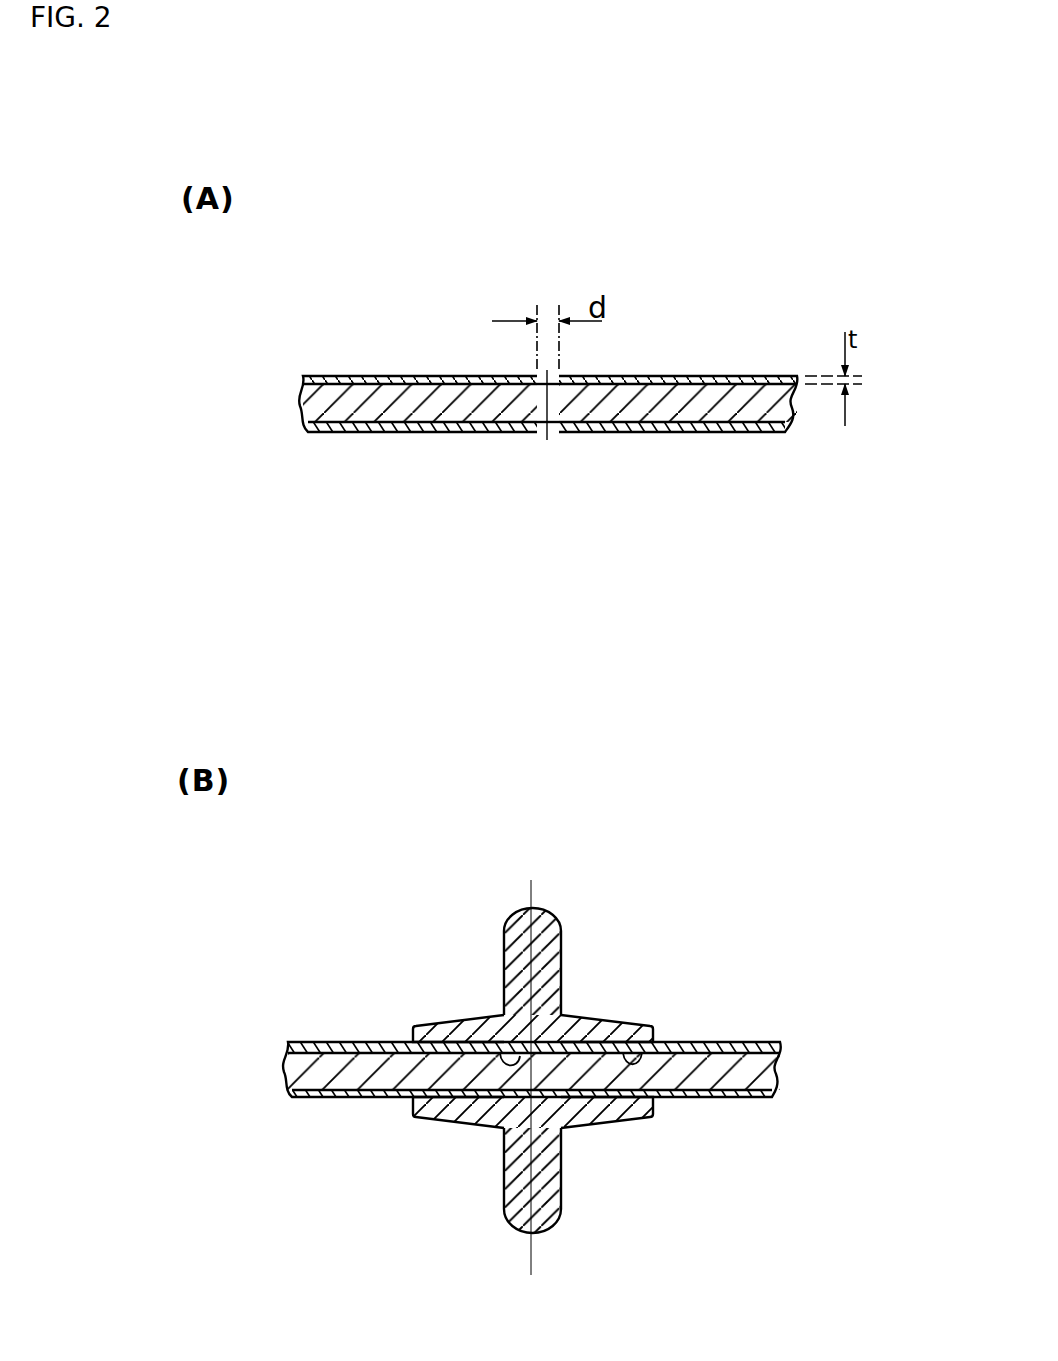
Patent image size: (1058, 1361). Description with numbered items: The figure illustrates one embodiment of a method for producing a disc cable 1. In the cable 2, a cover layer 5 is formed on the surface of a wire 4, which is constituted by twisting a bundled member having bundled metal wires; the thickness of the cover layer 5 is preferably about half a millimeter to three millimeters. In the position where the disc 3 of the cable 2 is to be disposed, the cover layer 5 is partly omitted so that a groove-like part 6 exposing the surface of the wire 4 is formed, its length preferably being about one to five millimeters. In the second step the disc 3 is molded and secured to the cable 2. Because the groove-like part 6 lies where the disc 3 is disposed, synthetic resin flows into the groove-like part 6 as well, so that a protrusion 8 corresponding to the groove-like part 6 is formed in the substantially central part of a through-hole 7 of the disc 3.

The disc cable 1 is at (579, 1035).
The cable 2 is at (325, 378).
The disc 3 is at (552, 1030).
The wire 4 is at (400, 396).
The cover layer 5 is at (690, 376).
The groove-like part 6 is at (547, 434).
The through-hole 7 is at (655, 1032).
The protrusion 8 is at (500, 1054).